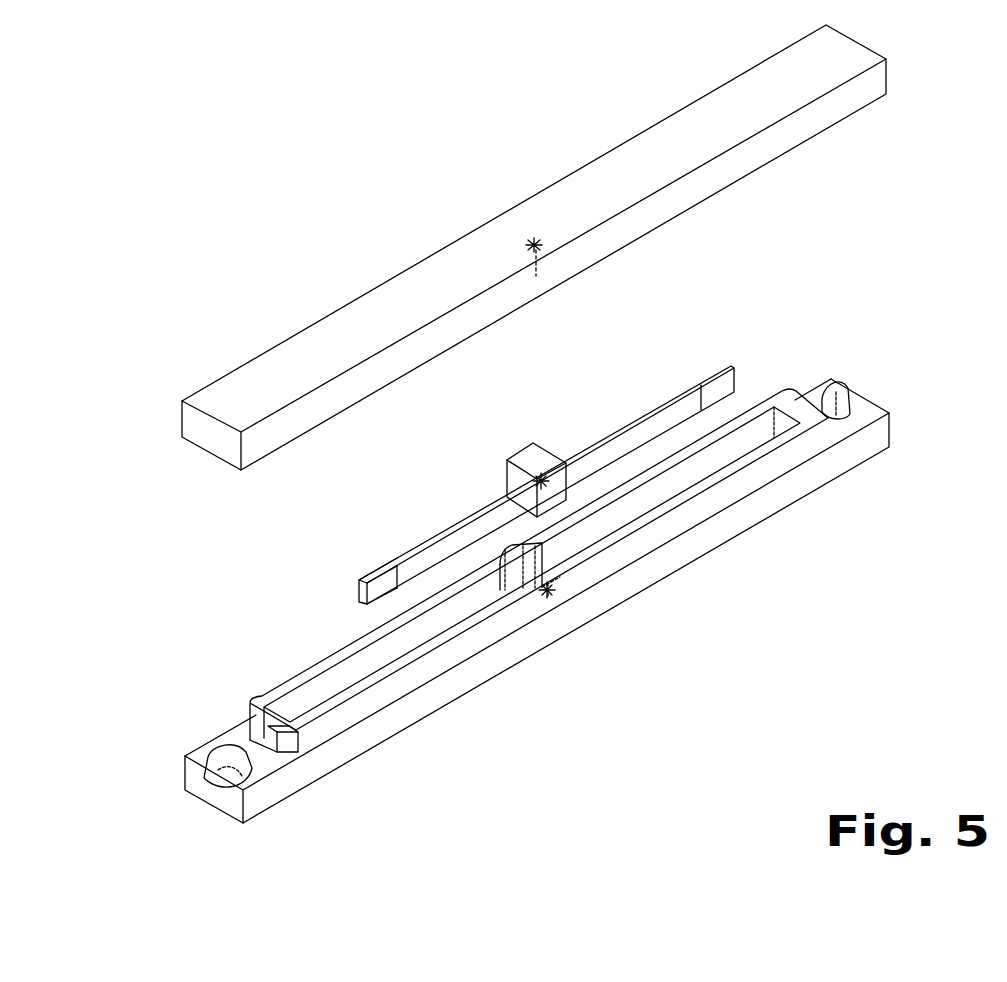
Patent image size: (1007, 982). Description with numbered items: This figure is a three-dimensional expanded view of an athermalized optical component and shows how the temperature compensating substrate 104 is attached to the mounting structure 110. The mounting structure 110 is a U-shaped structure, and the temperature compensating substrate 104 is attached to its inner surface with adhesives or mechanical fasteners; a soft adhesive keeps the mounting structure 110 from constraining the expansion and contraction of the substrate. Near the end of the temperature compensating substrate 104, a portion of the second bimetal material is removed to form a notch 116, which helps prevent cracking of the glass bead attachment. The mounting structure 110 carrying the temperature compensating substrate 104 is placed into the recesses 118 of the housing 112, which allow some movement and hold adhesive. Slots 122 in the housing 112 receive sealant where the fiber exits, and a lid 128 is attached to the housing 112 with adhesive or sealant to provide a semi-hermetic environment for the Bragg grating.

The temperature compensating substrate 104 is at (652, 430).
The mounting structure 110 is at (541, 480).
The housing 112 is at (483, 665).
The notch 116 is at (366, 580).
The recesses 118 is at (517, 563).
The slots 122 is at (258, 722).
The lid 128 is at (433, 297).